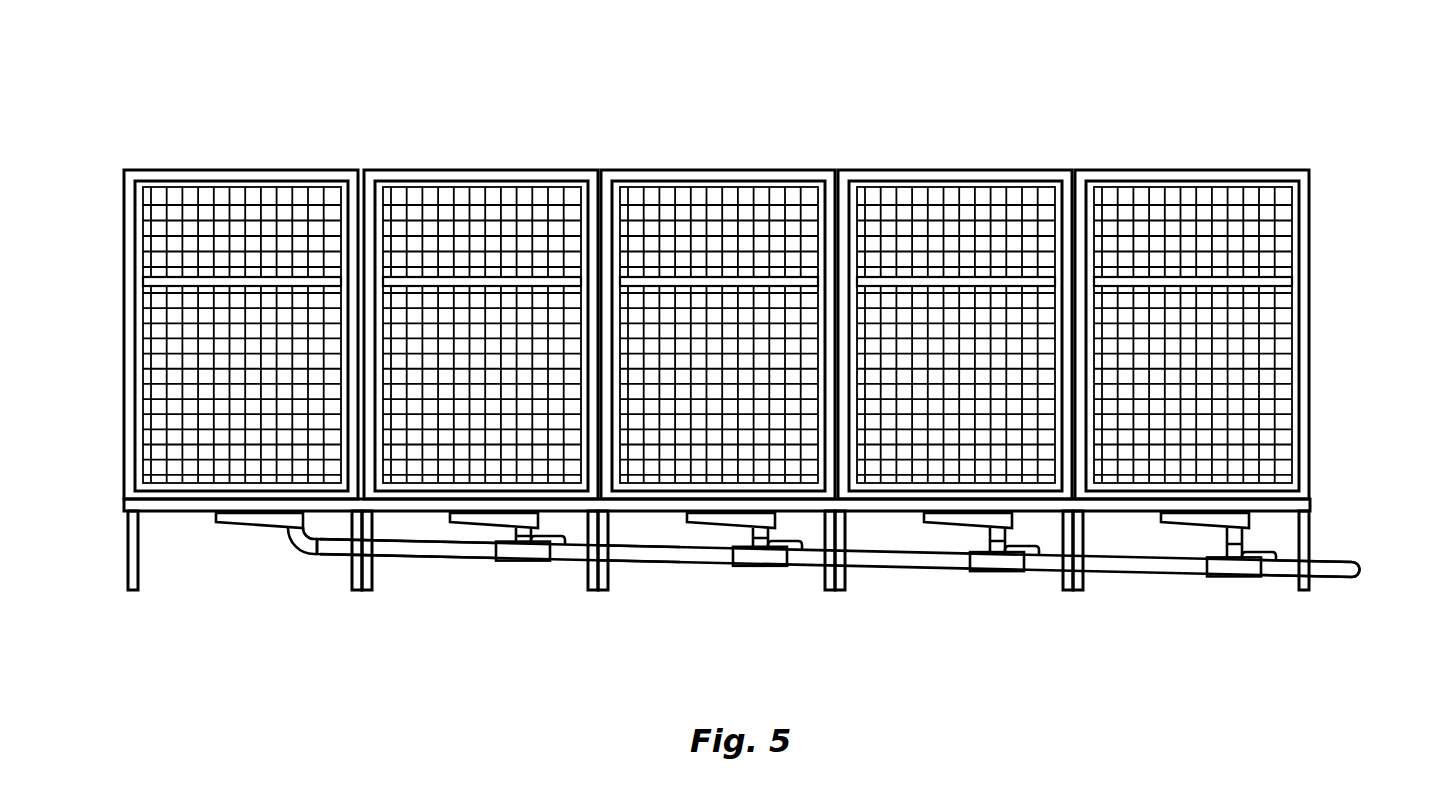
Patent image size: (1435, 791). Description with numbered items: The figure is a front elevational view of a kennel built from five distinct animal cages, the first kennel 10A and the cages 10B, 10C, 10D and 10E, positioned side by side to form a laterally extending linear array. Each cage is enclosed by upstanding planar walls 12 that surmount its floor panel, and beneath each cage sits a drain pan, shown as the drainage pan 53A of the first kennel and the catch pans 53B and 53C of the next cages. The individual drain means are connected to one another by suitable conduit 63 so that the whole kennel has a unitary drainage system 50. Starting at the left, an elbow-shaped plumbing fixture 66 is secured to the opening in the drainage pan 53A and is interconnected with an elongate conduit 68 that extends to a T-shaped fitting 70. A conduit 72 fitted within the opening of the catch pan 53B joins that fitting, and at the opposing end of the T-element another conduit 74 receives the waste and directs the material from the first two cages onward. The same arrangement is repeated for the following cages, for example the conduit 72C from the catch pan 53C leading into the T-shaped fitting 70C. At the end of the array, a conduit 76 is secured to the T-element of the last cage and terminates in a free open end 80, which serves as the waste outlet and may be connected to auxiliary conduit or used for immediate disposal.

The first kennel 10A is at (236, 158).
The cage 10B is at (473, 158).
The cage 10C is at (722, 158).
The cage 10D is at (966, 158).
The cage 10E is at (1182, 158).
The upstanding planar walls 12 is at (147, 350).
The main drain pipe 50 is at (487, 557).
The drainage pan 53A is at (236, 528).
The catch pan 53B is at (481, 516).
The catch pan 53C is at (717, 523).
The conduit 63 is at (470, 557).
The elbow-shaped plumbing fixture 66 is at (305, 556).
The elongate conduit 68 is at (393, 556).
The T-shaped fitting 70 is at (518, 557).
The T-shaped fitting 70C is at (757, 564).
The conduit 72 is at (553, 557).
The conduit 72C is at (800, 562).
The conduit 74 is at (717, 564).
The conduit 76 is at (1272, 577).
The free open end 80 is at (1357, 568).